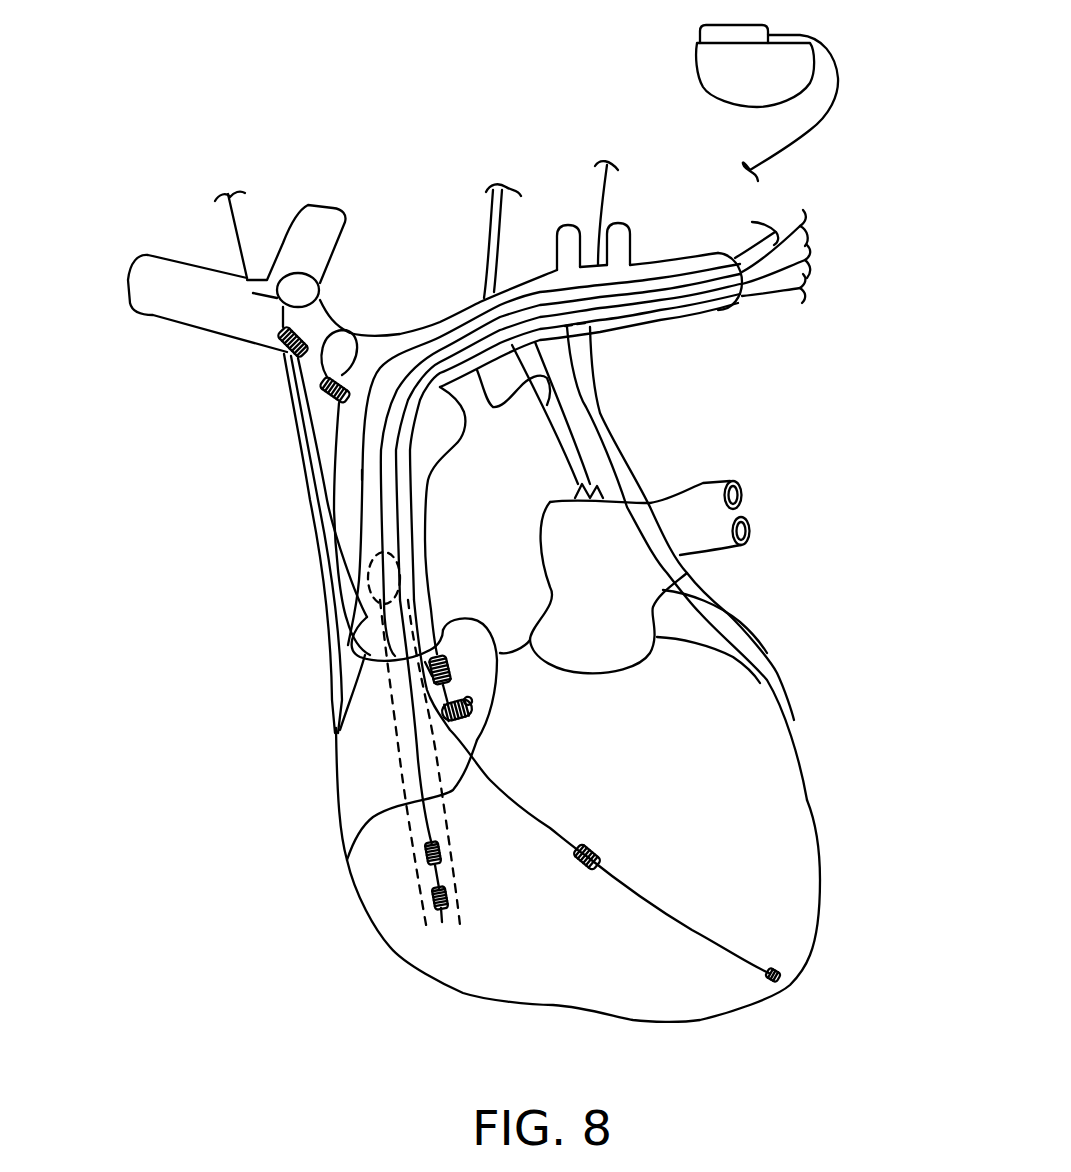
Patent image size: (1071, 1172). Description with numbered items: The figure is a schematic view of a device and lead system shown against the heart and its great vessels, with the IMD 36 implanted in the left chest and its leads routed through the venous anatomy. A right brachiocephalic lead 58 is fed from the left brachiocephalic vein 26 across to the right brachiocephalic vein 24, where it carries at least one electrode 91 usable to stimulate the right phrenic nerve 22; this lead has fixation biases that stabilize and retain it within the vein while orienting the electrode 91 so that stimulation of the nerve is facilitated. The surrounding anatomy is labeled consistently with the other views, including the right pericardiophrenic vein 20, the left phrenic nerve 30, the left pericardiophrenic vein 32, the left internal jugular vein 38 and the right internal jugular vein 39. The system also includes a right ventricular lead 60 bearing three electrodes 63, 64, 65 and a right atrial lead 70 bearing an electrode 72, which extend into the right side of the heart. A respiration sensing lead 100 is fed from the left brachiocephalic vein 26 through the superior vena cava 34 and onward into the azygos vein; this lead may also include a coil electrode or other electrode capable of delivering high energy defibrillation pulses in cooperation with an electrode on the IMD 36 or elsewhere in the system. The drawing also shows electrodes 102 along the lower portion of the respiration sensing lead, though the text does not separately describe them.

The right pericardiophrenic vein 20 is at (313, 443).
The right phrenic nerve 22 is at (233, 238).
The right brachiocephalic vein 24 is at (192, 307).
The left brachiocephalic vein 26 is at (482, 293).
The left phrenic nerve 30 is at (597, 197).
The left pericardiophrenic vein 32 is at (597, 450).
The superior vena cava 34 is at (373, 622).
The IMD 36 is at (772, 86).
The left internal jugular vein 38 is at (566, 240).
The right internal jugular vein 39 is at (325, 218).
The right brachiocephalic lead 58 is at (287, 320).
The right ventricular lead 60 is at (687, 930).
The electrode 63 is at (430, 668).
The electrode 64 is at (593, 853).
The electrode 65 is at (780, 973).
The right atrial lead 70 is at (417, 614).
The electrode 72 is at (478, 712).
The electrode 91 is at (355, 398).
The respiration sensing lead 100 is at (357, 488).
The electrodes 102 is at (427, 855).